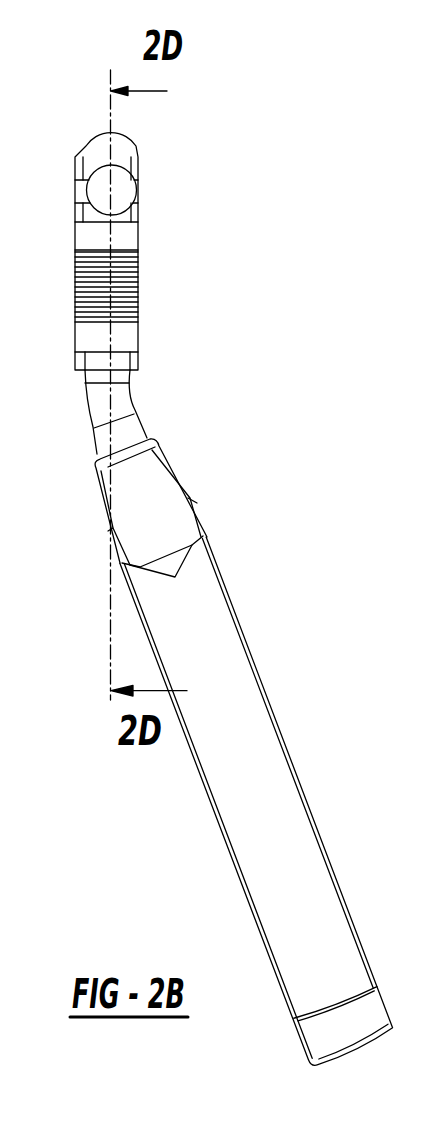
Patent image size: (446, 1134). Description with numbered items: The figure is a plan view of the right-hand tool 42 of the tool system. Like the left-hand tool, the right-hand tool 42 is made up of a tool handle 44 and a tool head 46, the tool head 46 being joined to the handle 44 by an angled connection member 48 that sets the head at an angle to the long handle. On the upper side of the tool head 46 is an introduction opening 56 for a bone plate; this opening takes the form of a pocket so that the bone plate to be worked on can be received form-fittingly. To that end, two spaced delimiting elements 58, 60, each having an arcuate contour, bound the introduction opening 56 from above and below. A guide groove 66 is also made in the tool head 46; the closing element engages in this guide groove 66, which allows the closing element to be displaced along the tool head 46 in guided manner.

The right-hand tool 42 is at (210, 571).
The tool handle 44 is at (268, 770).
The tool head 46 is at (133, 362).
The angled connection member 48 is at (127, 432).
The introduction opening 56 is at (123, 192).
The delimiting element 58 is at (135, 162).
The delimiting element 60 is at (124, 214).
The guide groove 66 is at (78, 163).